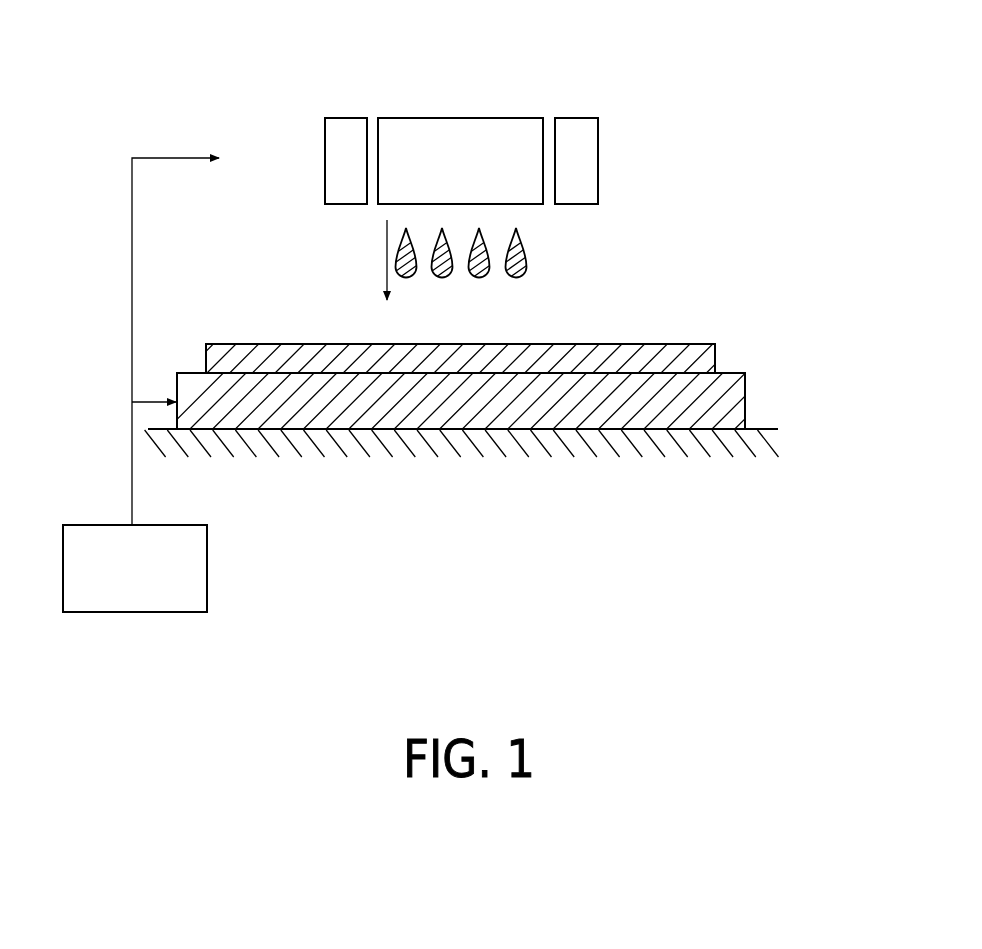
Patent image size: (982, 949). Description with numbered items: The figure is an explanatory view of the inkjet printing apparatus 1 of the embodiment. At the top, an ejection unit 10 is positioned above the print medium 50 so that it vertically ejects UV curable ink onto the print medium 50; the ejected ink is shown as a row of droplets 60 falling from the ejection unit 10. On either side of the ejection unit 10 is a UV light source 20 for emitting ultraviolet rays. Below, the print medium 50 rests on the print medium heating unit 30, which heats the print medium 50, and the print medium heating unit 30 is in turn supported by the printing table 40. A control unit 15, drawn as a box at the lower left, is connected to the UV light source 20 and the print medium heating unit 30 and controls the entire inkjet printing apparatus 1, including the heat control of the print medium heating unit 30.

The inkjet printing apparatus 1 is at (540, 69).
The ejection unit 10 is at (447, 171).
The control unit 15 is at (122, 579).
The UV light source 20 is at (327, 182).
The print medium heating unit 30 is at (744, 373).
The printing table 40 is at (656, 456).
The print medium 50 is at (643, 352).
The ink droplets 60 is at (523, 254).